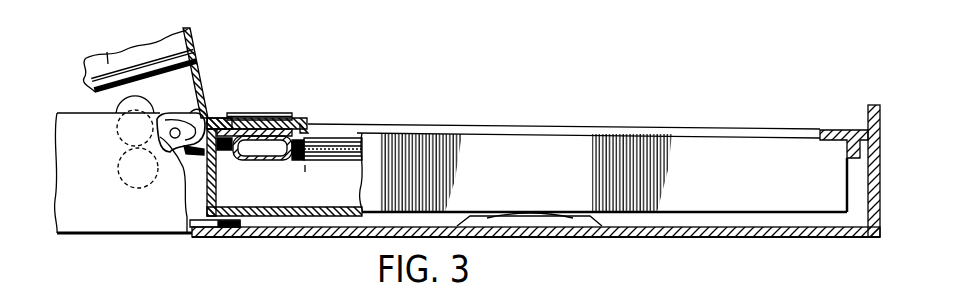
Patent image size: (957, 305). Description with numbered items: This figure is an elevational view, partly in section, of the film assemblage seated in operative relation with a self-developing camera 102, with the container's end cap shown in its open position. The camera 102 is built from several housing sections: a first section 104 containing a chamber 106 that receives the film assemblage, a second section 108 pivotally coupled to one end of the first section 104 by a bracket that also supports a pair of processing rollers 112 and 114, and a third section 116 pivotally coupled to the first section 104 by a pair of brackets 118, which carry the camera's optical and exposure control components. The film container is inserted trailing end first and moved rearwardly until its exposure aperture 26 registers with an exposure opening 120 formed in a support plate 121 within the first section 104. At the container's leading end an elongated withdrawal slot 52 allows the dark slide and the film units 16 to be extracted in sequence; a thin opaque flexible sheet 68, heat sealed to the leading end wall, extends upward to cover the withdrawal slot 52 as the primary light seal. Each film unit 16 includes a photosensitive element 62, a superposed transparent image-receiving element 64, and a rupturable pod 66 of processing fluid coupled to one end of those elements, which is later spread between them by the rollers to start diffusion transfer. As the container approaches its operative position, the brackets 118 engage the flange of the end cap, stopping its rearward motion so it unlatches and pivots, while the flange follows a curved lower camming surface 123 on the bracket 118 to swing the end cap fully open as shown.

The film unit 16 is at (305, 161).
The exposure aperture 26 is at (341, 129).
The withdrawal slot 52 is at (228, 120).
The photosensitive element 62 is at (352, 162).
The transparent image-receiving element 64 is at (338, 149).
The rupturable pod 66 is at (270, 160).
The flexible sheet 68 is at (198, 118).
The self-developing camera 102 is at (607, 236).
The first section 104 is at (722, 228).
The chamber 106 is at (833, 224).
The second section 108 is at (150, 221).
The processing roller 112 is at (117, 124).
The processing roller 114 is at (118, 169).
The third section 116 is at (191, 45).
The bracket 118 is at (161, 139).
The exposure opening 120 is at (294, 123).
The support plate 121 is at (265, 114).
The curved lower camming surface 123 is at (172, 152).